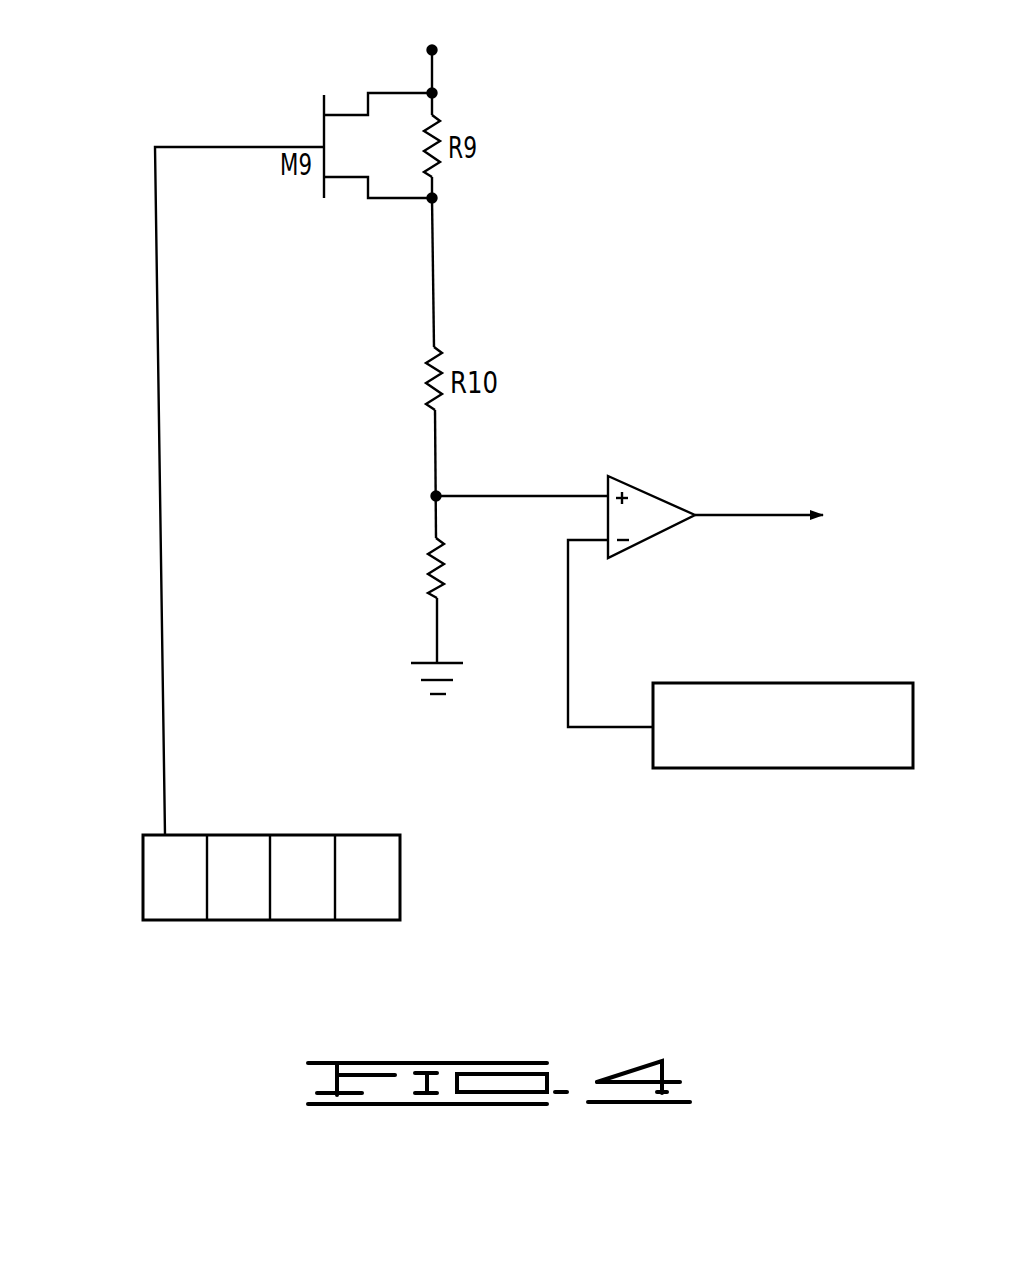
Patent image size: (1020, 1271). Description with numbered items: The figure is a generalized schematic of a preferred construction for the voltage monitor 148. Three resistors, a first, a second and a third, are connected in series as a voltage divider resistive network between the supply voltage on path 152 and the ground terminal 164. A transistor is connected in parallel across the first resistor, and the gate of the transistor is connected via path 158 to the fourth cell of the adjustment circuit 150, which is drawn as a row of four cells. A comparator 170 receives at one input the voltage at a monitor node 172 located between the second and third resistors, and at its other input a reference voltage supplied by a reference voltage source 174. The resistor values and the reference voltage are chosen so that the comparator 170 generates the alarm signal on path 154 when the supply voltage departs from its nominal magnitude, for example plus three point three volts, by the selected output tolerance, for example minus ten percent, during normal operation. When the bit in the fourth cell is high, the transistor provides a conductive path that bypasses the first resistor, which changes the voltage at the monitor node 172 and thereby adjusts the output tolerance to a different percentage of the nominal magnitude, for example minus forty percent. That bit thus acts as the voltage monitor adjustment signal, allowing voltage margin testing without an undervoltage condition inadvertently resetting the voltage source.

The voltage monitor 148 is at (674, 593).
The adjustment circuit 150 is at (247, 934).
The path 152 is at (430, 85).
The path 154 is at (767, 513).
The path 158 is at (163, 732).
The ground terminal 164 is at (440, 647).
The comparator 170 is at (652, 492).
The monitor node 172 is at (408, 534).
The reference voltage source 174 is at (750, 768).